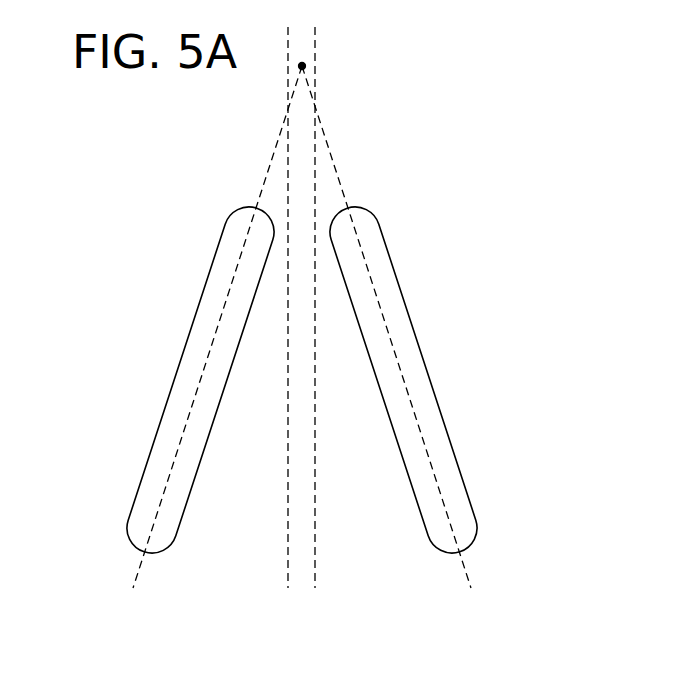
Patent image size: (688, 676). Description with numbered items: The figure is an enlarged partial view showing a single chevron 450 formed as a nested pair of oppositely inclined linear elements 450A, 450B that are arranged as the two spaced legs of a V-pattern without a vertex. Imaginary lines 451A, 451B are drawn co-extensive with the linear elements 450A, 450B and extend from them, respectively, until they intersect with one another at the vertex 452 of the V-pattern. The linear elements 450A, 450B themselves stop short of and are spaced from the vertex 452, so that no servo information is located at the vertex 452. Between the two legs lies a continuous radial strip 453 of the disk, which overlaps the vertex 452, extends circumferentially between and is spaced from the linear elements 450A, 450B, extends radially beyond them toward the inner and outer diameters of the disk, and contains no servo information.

The chevron 450 is at (307, 372).
The linear element 450A is at (197, 315).
The linear element 450B is at (405, 313).
The imaginary line 451A is at (138, 575).
The imaginary line 451B is at (463, 575).
The vertex 452 is at (304, 65).
The continuous radial strip 453 is at (315, 590).